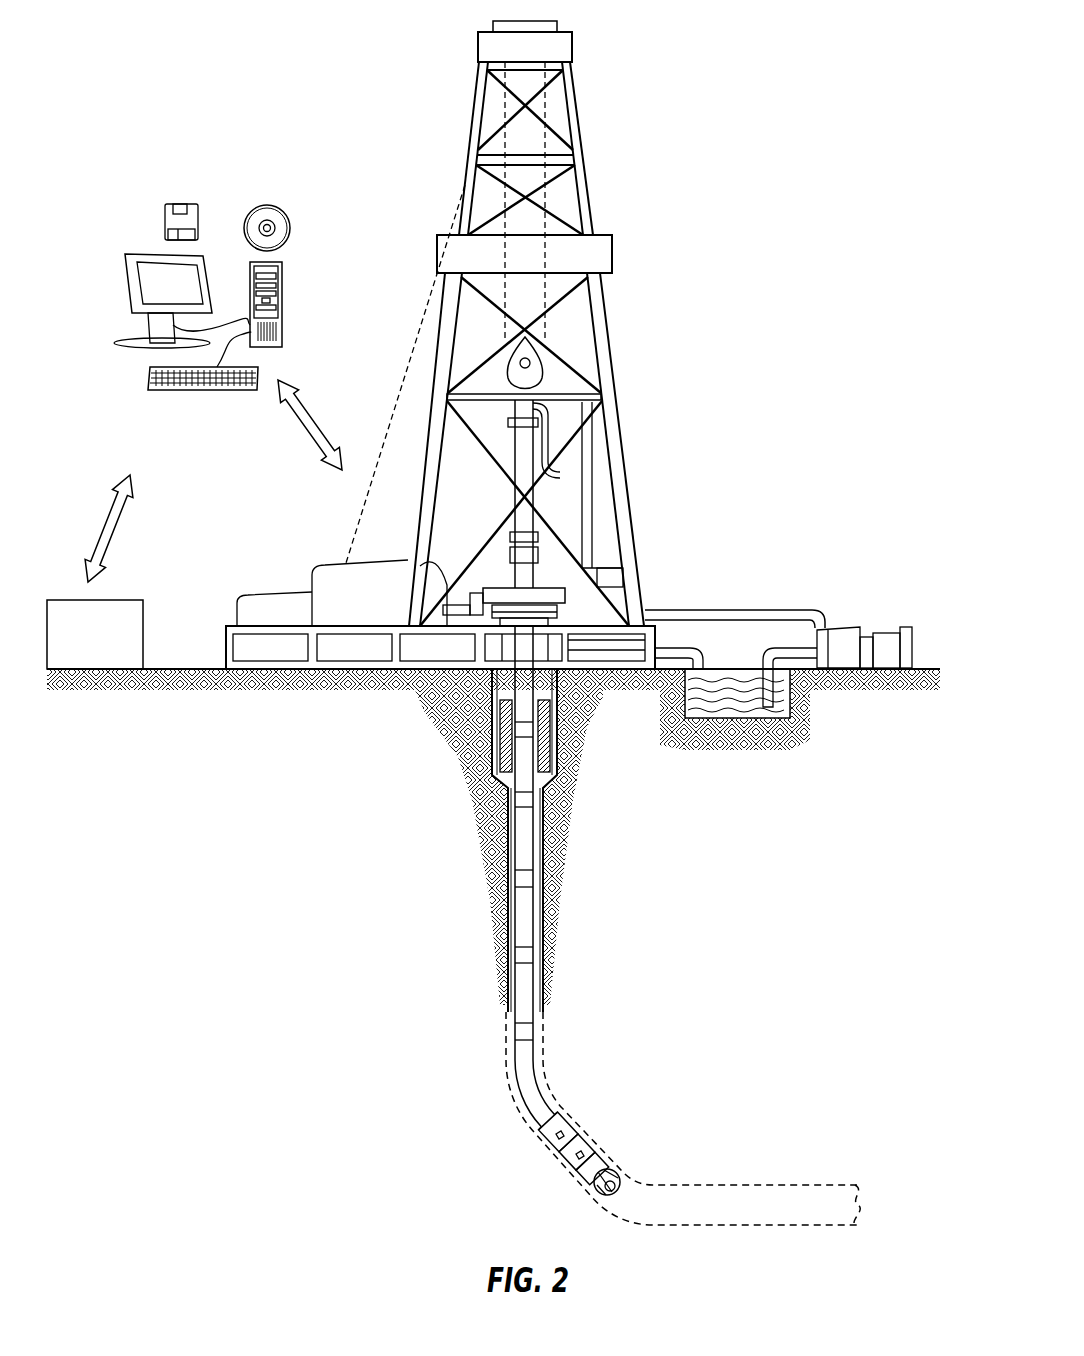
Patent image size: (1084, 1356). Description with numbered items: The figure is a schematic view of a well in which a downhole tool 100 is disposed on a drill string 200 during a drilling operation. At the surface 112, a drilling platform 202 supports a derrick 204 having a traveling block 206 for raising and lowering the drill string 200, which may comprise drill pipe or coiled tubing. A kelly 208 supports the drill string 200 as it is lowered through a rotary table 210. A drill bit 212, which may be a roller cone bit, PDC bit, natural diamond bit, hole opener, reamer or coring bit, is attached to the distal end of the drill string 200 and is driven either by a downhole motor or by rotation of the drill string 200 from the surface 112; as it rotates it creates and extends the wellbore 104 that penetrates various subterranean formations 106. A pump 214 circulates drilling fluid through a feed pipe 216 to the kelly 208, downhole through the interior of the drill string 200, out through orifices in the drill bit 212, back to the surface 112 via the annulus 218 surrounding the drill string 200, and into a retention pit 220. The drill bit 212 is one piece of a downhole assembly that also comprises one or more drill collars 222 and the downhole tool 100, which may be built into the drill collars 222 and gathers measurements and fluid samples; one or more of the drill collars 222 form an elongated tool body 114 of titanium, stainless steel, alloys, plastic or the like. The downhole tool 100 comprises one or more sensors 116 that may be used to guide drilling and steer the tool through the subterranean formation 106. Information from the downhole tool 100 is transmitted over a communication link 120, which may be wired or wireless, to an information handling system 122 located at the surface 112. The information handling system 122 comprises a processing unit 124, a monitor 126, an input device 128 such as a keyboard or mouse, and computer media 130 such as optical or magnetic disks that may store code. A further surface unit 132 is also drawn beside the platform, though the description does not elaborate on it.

The downhole tool 100 is at (574, 1130).
The wellbore 104 is at (545, 875).
The subterranean formation 106 is at (769, 966).
The surface 112 is at (922, 668).
The tool body 114 is at (565, 1118).
The sensors 116 is at (572, 1170).
The communication link 120 is at (295, 432).
The information handling system 122 is at (199, 302).
The processing unit 124 is at (283, 275).
The monitor 126 is at (128, 295).
The input device 128 is at (158, 392).
The computer media 130 is at (263, 208).
The surface controller unit 132 is at (112, 647).
The drill string 200 is at (534, 855).
The drilling platform 202 is at (225, 648).
The derrick 204 is at (585, 176).
The traveling block 206 is at (547, 367).
The kelly 208 is at (525, 450).
The rotary table 210 is at (560, 588).
The drill bit 212 is at (617, 1163).
The pump 214 is at (845, 628).
The feed pipe 216 is at (765, 608).
The annulus 218 is at (507, 875).
The retention pit 220 is at (732, 703).
The drill collars 222 is at (572, 1138).